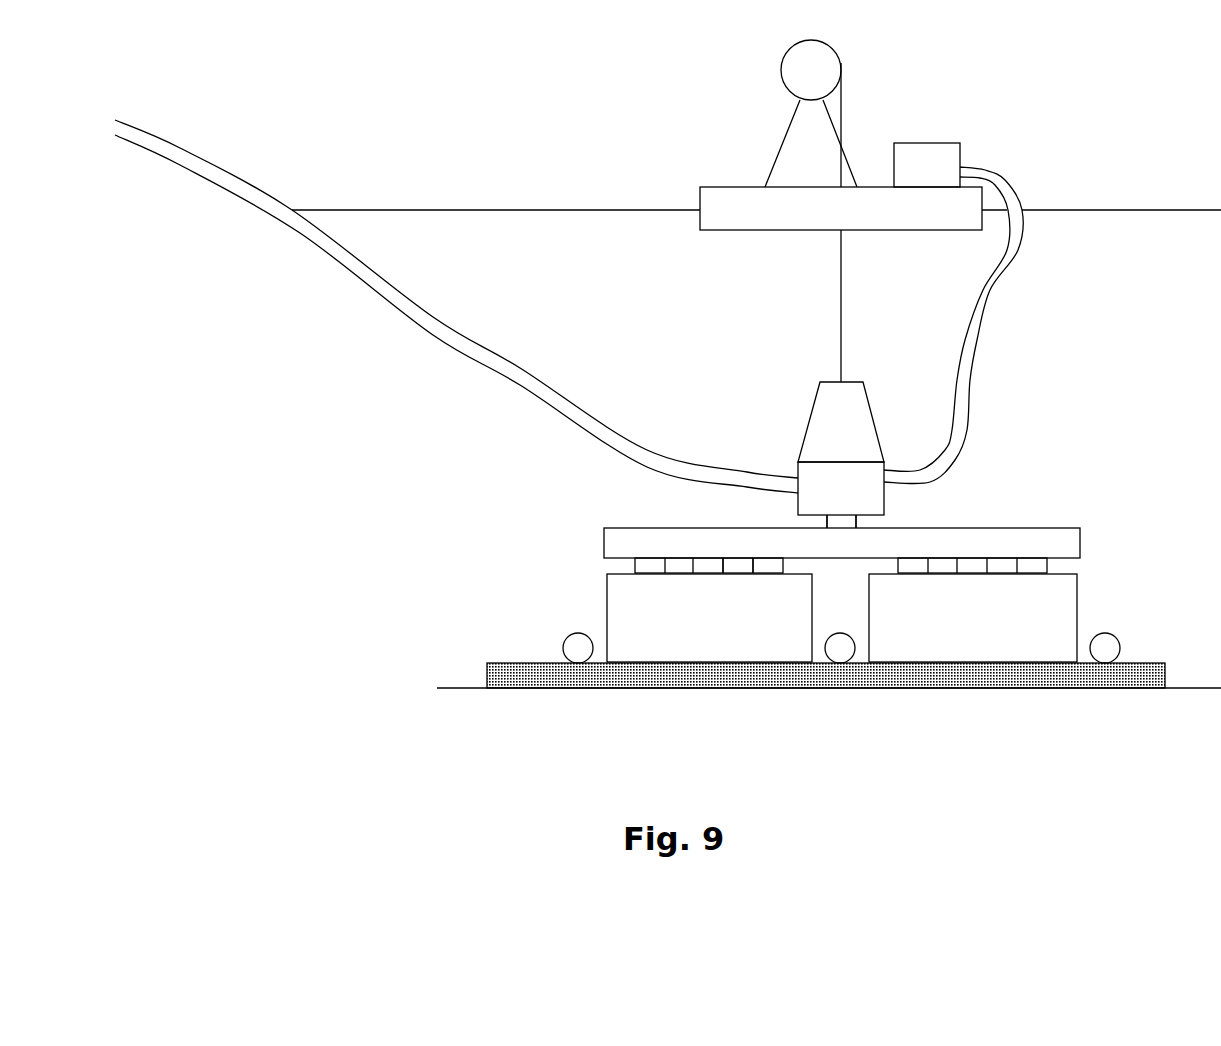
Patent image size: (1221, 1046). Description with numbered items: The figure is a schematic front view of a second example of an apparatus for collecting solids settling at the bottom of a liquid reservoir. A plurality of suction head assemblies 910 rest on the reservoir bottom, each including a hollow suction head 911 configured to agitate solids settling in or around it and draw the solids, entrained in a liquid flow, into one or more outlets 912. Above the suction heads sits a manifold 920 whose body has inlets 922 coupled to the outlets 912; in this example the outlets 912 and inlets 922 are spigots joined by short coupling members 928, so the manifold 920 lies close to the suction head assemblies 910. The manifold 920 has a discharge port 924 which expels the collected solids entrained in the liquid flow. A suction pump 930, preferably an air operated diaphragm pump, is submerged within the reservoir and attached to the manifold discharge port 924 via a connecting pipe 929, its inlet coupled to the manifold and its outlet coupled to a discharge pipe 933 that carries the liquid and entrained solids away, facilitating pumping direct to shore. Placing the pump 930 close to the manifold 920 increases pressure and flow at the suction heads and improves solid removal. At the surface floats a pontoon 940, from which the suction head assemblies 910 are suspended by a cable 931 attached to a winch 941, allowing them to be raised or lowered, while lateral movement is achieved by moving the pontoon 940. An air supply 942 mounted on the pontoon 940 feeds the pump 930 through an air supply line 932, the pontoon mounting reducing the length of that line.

The suction head assembly 910 is at (703, 638).
The hollow suction head 911 is at (607, 617).
The outlet 912 is at (638, 570).
The manifold 920 is at (605, 535).
The inlet 922 is at (767, 558).
The discharge port 924 is at (838, 528).
The coupling member 928 is at (702, 565).
The connecting pipe 929 is at (857, 523).
The suction pump 930 is at (825, 420).
The cable 931 is at (840, 325).
The air supply line 932 is at (988, 313).
The discharge pipe 933 is at (500, 372).
The pontoon 940 is at (698, 200).
The winch 941 is at (788, 130).
The air supply 942 is at (957, 155).
The seabed S is at (565, 680).